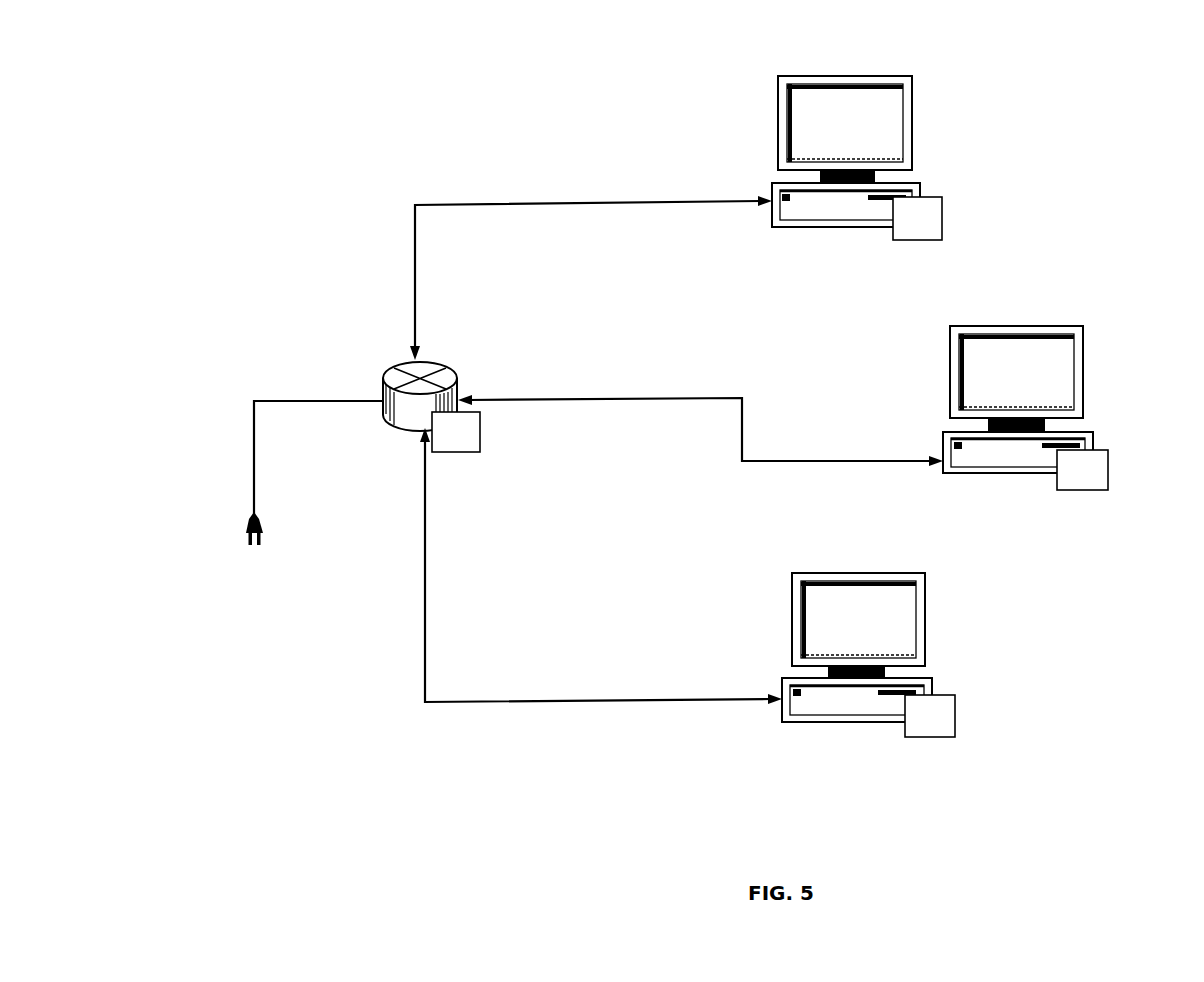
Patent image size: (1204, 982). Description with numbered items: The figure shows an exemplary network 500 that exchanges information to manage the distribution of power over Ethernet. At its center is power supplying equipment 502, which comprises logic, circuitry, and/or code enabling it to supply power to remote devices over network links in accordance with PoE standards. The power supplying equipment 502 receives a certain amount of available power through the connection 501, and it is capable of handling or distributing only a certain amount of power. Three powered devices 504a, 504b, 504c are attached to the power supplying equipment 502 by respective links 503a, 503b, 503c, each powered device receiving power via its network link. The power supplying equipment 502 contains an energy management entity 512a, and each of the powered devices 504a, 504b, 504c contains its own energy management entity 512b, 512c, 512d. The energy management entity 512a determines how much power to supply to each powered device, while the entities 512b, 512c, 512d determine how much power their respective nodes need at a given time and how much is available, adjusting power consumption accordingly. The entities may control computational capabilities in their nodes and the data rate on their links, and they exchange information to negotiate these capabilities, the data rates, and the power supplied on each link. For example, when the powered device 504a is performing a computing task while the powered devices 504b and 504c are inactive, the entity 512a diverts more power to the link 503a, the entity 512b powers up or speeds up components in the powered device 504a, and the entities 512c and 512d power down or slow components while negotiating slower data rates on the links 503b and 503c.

The network system 500 is at (198, 110).
The connection 501 is at (307, 400).
The power supplying equipment (PSE) 502 is at (400, 364).
The link 503a is at (512, 205).
The link 503b is at (597, 398).
The link 503c is at (598, 701).
The powered device (PD) 504a is at (781, 77).
The powered device (PD) 504b is at (953, 327).
The powered device (PD) 504c is at (794, 574).
The energy management entity 512a is at (481, 433).
The energy management entity 512b is at (942, 215).
The energy management entity 512c is at (1108, 470).
The energy management entity 512d is at (955, 715).